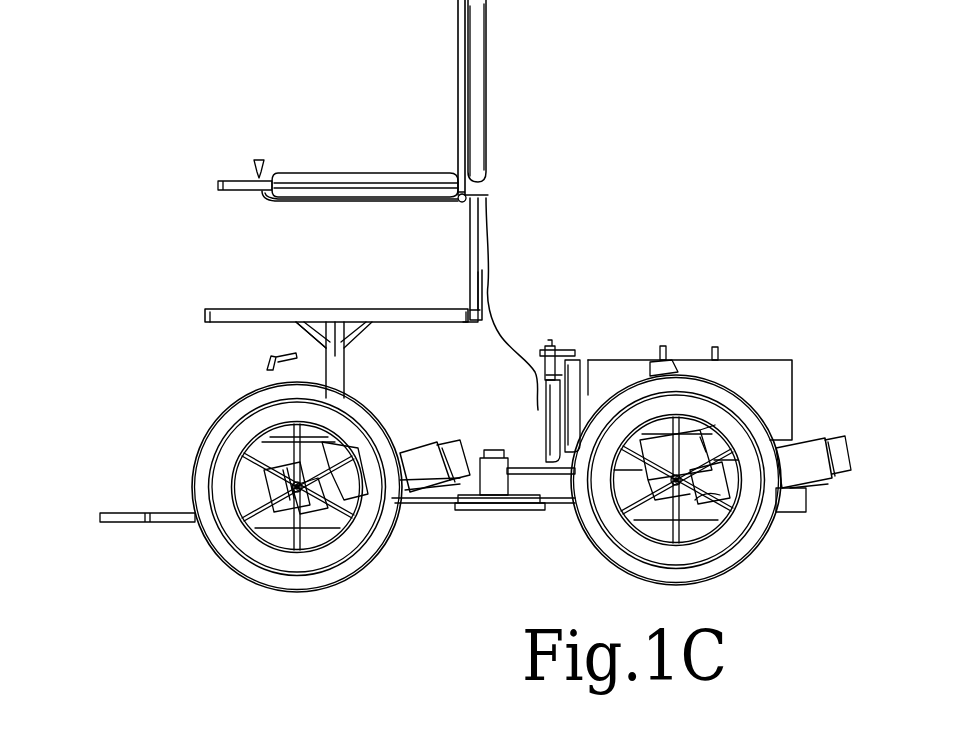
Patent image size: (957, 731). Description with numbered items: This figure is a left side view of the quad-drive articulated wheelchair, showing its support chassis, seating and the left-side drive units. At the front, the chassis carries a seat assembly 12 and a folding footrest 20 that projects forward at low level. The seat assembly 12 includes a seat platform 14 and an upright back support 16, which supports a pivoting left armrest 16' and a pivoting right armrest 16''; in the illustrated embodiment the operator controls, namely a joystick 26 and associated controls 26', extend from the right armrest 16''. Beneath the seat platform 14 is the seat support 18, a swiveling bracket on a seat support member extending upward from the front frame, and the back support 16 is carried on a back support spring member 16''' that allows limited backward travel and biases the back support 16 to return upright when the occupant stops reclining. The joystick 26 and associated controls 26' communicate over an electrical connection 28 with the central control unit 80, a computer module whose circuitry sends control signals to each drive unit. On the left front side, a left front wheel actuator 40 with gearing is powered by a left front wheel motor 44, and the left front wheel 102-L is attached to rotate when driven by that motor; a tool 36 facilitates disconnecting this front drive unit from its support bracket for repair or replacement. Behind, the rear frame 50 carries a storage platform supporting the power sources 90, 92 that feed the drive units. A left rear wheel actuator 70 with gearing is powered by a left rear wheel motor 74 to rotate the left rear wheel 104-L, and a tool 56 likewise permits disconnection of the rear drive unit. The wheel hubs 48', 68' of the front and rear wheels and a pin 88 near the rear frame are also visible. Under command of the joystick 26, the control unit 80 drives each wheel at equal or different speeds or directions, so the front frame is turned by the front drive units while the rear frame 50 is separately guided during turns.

The seat assembly 12 is at (256, 128).
The seat platform 14 is at (258, 310).
The back support 16 is at (425, 97).
The left armrest 16' is at (513, 91).
The right armrest 16'' is at (360, 153).
The back support spring member 16''' is at (474, 331).
The seat support 18 is at (312, 330).
The folding footrest 20 is at (135, 512).
The joystick 26 is at (282, 136).
The associated controls 26' is at (221, 154).
The electrical connection 28 is at (494, 342).
The tool 36 is at (262, 370).
The left front wheel actuator 40 is at (340, 424).
The left front wheel motor 44 is at (420, 460).
The wheel hub 48' is at (342, 546).
The rear frame 50 is at (548, 504).
The tool 56 is at (661, 362).
The wheel hub 68' is at (745, 530).
The left rear wheel actuator 70 is at (704, 420).
The left rear wheel motor 74 is at (800, 446).
The central control unit 80 is at (568, 428).
The pin 88 is at (557, 342).
The power source 90 is at (738, 372).
The power source 92 is at (612, 368).
The left front wheel 102-L is at (232, 530).
The left rear wheel 104-L is at (606, 525).